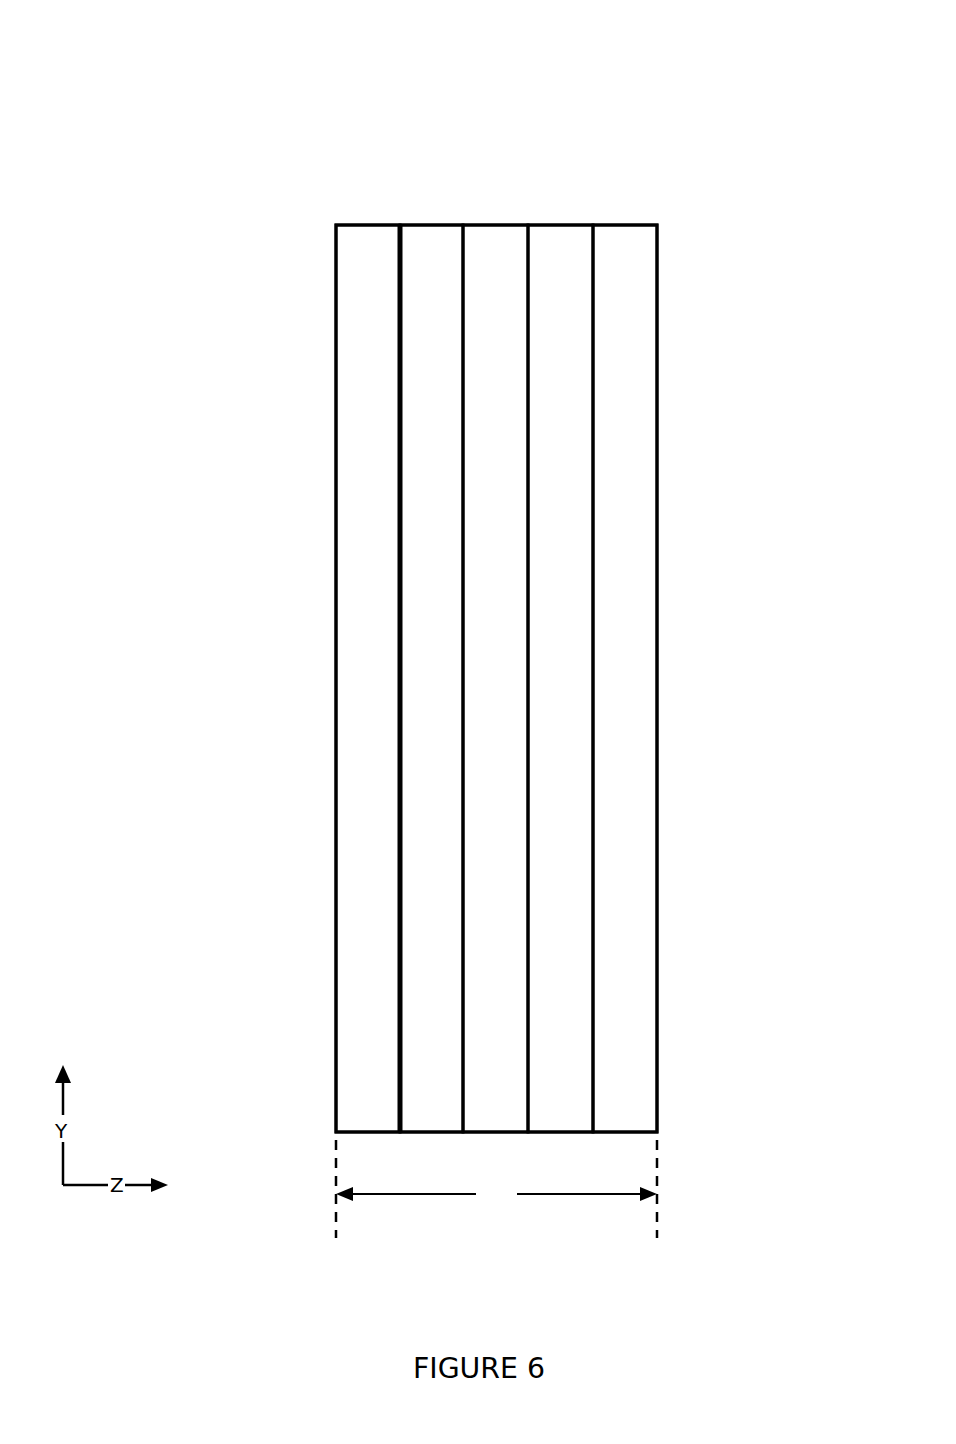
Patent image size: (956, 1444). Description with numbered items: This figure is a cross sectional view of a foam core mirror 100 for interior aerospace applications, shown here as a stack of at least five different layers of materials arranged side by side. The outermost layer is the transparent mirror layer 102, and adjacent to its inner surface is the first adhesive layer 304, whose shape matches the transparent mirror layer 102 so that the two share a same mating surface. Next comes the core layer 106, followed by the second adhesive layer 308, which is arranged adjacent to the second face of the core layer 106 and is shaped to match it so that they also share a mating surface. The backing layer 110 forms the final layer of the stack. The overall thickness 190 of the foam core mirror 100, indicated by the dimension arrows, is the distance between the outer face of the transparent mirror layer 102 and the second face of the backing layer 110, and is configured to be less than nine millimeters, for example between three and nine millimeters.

The foam core mirror 100 is at (733, 151).
The transparent mirror layer 102 is at (363, 253).
The first adhesive layer 304 is at (433, 253).
The core layer 106 is at (497, 253).
The second adhesive layer 308 is at (558, 253).
The backing layer 110 is at (630, 253).
The thickness 190 is at (496, 1189).